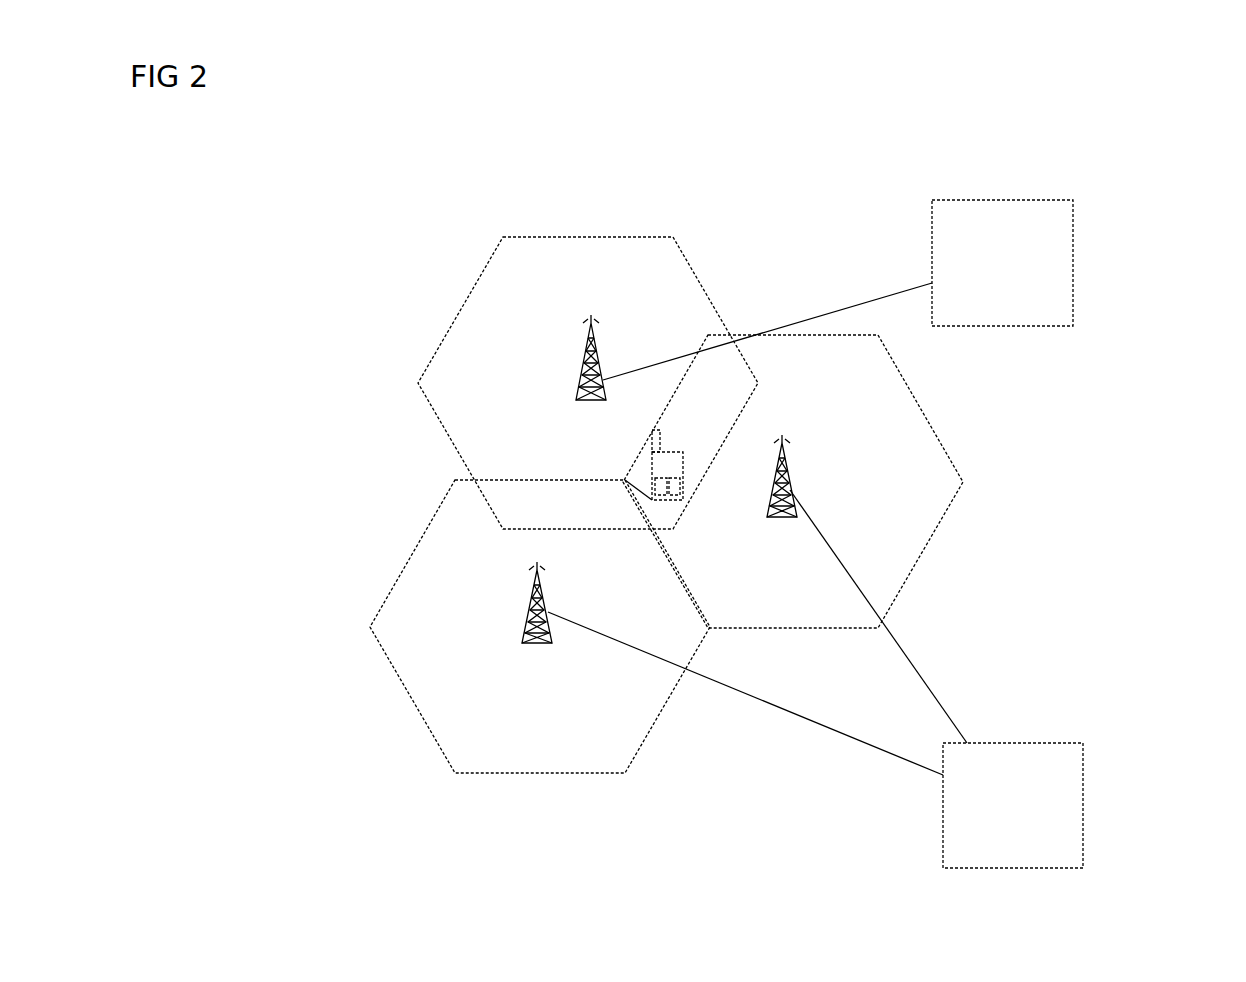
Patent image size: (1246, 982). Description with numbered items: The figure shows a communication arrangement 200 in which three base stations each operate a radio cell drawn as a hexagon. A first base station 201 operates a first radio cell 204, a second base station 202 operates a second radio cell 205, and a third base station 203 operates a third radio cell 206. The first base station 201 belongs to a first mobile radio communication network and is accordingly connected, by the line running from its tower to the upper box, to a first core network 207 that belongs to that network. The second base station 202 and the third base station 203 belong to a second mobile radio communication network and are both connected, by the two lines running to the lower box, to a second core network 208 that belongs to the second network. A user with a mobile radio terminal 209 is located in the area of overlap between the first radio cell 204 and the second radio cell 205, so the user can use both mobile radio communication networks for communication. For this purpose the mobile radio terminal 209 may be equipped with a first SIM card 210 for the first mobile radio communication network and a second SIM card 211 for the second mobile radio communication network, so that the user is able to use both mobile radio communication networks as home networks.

The communication arrangement 200 is at (1180, 140).
The first base station 201 is at (584, 361).
The second base station 202 is at (792, 465).
The third base station 203 is at (547, 590).
The first radio cell 204 is at (690, 262).
The second radio cell 205 is at (930, 425).
The third radio cell 206 is at (435, 515).
The first core network 207 is at (985, 200).
The second core network 208 is at (1035, 743).
The mobile radio terminal 209 is at (652, 478).
The first SIM card 210 is at (683, 485).
The second SIM card 211 is at (650, 500).